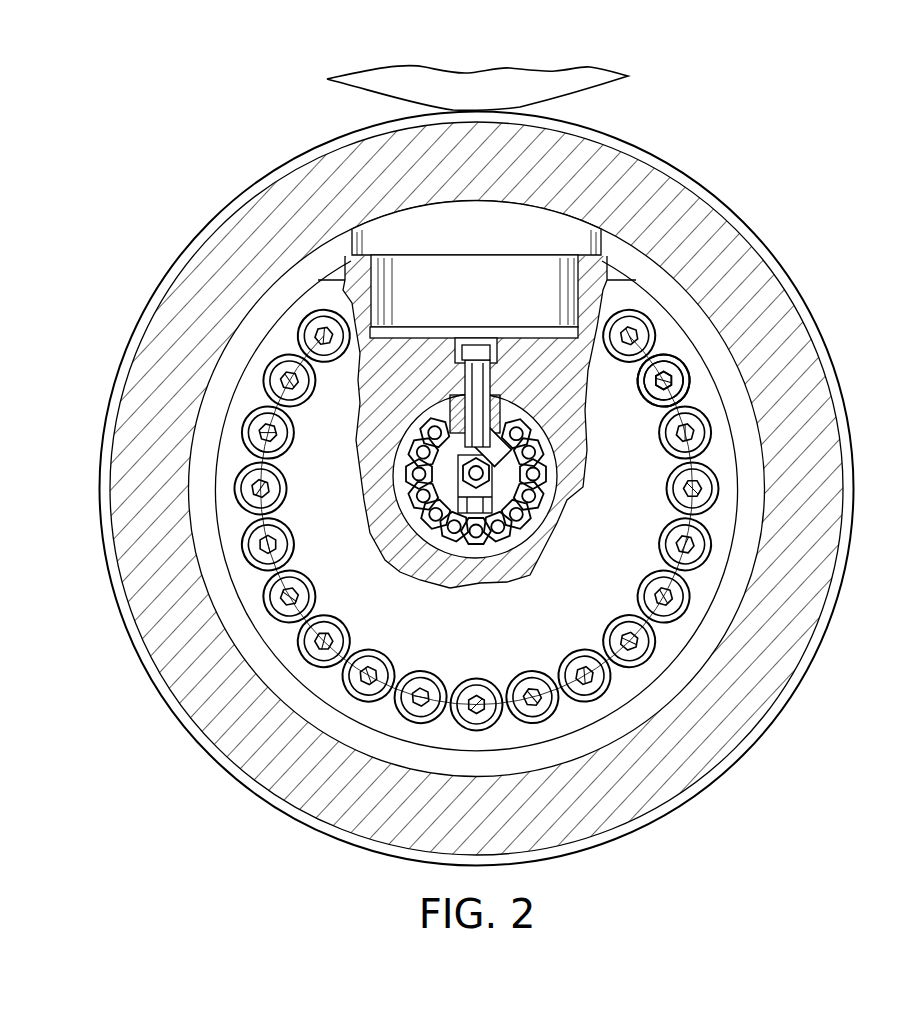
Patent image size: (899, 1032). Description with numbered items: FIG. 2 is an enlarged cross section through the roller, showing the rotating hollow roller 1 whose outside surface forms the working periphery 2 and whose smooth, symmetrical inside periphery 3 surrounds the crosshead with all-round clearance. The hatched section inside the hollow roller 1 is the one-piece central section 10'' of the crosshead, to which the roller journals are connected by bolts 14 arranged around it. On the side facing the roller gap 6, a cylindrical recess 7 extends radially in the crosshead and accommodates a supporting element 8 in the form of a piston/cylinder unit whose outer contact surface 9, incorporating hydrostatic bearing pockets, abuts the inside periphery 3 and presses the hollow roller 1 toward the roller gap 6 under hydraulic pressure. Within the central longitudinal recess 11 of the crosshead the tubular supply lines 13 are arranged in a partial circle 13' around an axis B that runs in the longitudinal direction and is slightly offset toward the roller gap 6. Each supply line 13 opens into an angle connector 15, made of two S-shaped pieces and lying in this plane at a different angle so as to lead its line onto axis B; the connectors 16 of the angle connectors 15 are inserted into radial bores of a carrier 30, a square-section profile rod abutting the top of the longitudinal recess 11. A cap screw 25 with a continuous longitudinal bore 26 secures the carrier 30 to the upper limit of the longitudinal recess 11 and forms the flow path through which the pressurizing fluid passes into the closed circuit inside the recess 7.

The hollow roller 1 is at (272, 225).
The working periphery 2 is at (341, 132).
The inside periphery 3 is at (250, 320).
The roller gap 6 is at (550, 108).
The cylindrical recess 7 is at (552, 332).
The supporting element 8 is at (553, 232).
The contact surface 9 is at (452, 200).
The central section of the crosshead 10'' is at (554, 422).
The longitudinal recess 11 is at (369, 533).
The supply line 13 is at (448, 520).
The partial circle 13' is at (750, 366).
The bolts 14 is at (580, 651).
The angle connector 15 is at (516, 520).
The connector 16 is at (433, 450).
The cap screw 25 is at (440, 385).
The longitudinal bore 26 is at (480, 348).
The carrier 30 is at (448, 420).
The axis B is at (507, 455).